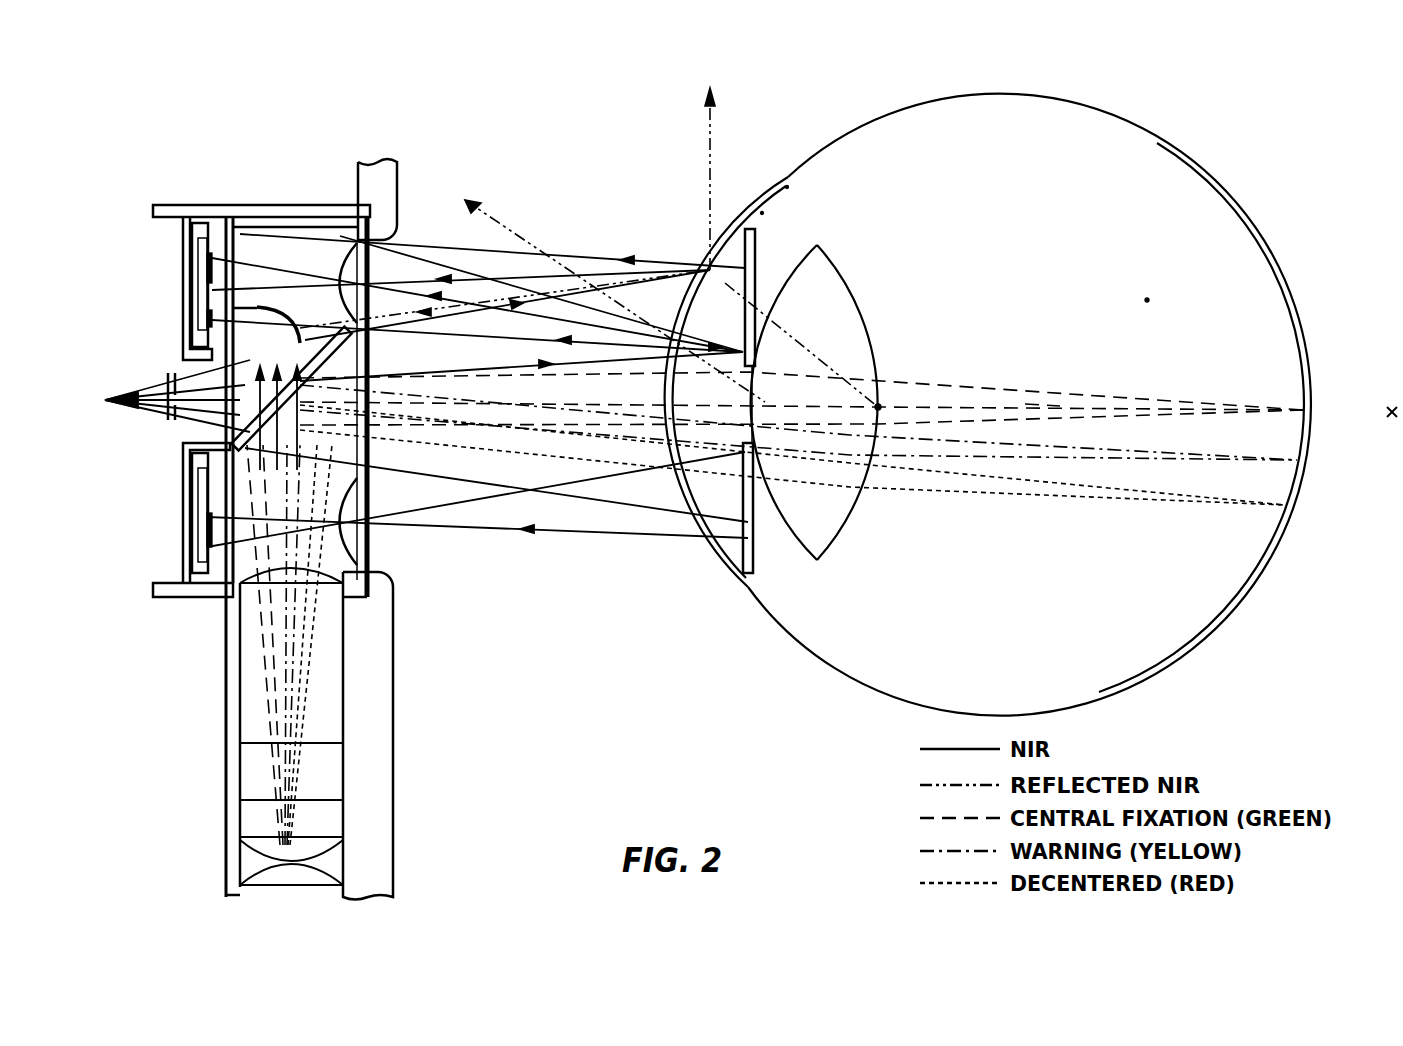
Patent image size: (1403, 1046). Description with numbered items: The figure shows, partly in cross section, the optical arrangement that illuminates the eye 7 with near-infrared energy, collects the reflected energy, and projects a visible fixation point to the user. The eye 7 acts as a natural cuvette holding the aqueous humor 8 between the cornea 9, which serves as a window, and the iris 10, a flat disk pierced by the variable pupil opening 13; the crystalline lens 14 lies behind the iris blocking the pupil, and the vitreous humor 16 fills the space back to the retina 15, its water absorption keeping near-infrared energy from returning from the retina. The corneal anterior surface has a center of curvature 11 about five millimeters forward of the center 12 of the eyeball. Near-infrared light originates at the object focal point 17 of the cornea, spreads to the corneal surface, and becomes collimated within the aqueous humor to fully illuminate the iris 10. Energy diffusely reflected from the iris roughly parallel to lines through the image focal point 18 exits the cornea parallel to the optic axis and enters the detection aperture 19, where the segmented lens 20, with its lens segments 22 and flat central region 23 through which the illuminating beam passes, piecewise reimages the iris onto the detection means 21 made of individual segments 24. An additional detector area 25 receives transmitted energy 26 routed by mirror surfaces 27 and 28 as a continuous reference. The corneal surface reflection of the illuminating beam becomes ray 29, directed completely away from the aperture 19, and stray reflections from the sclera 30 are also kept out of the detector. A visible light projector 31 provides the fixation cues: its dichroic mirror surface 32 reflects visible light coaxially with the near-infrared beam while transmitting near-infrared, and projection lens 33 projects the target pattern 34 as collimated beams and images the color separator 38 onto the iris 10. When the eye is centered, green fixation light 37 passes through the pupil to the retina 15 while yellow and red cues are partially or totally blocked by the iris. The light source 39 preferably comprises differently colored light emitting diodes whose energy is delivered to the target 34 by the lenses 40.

The eye 7 is at (1173, 142).
The aqueous humor 8 is at (732, 515).
The cornea 9 is at (693, 517).
The iris 10 is at (753, 512).
The center of curvature 11 is at (878, 407).
The center of the eyeball 12 is at (1037, 407).
The pupil opening 13 is at (787, 187).
The crystalline lens 14 is at (840, 267).
The retina 15 is at (1247, 213).
The vitreous humor 16 is at (1147, 300).
The object focal point 17 is at (105, 407).
The image focal point 18 is at (1392, 407).
The detection aperture 19 is at (398, 268).
The segmented lens 20 is at (370, 572).
The detection means 21 is at (207, 240).
The lens segments 22 is at (355, 543).
The flat central region 23 is at (370, 448).
The individual segments 24 is at (207, 257).
The additional detector area 25 is at (207, 320).
The transmitted energy 26 is at (215, 357).
The mirror surface 27 is at (195, 427).
The mirror surface 28 is at (280, 308).
The reflected ray 29 is at (710, 177).
The sclera 30 is at (762, 213).
The visible light projector 31 is at (225, 735).
The mirror surface 32 is at (245, 453).
The projection lens 33 is at (240, 600).
The target pattern 34 is at (340, 743).
The central fixation light / inner arrows 37 is at (963, 390).
The color separator / outer arrows 38 is at (338, 800).
The light source 39 is at (1167, 503).
The lenses 40 is at (252, 853).